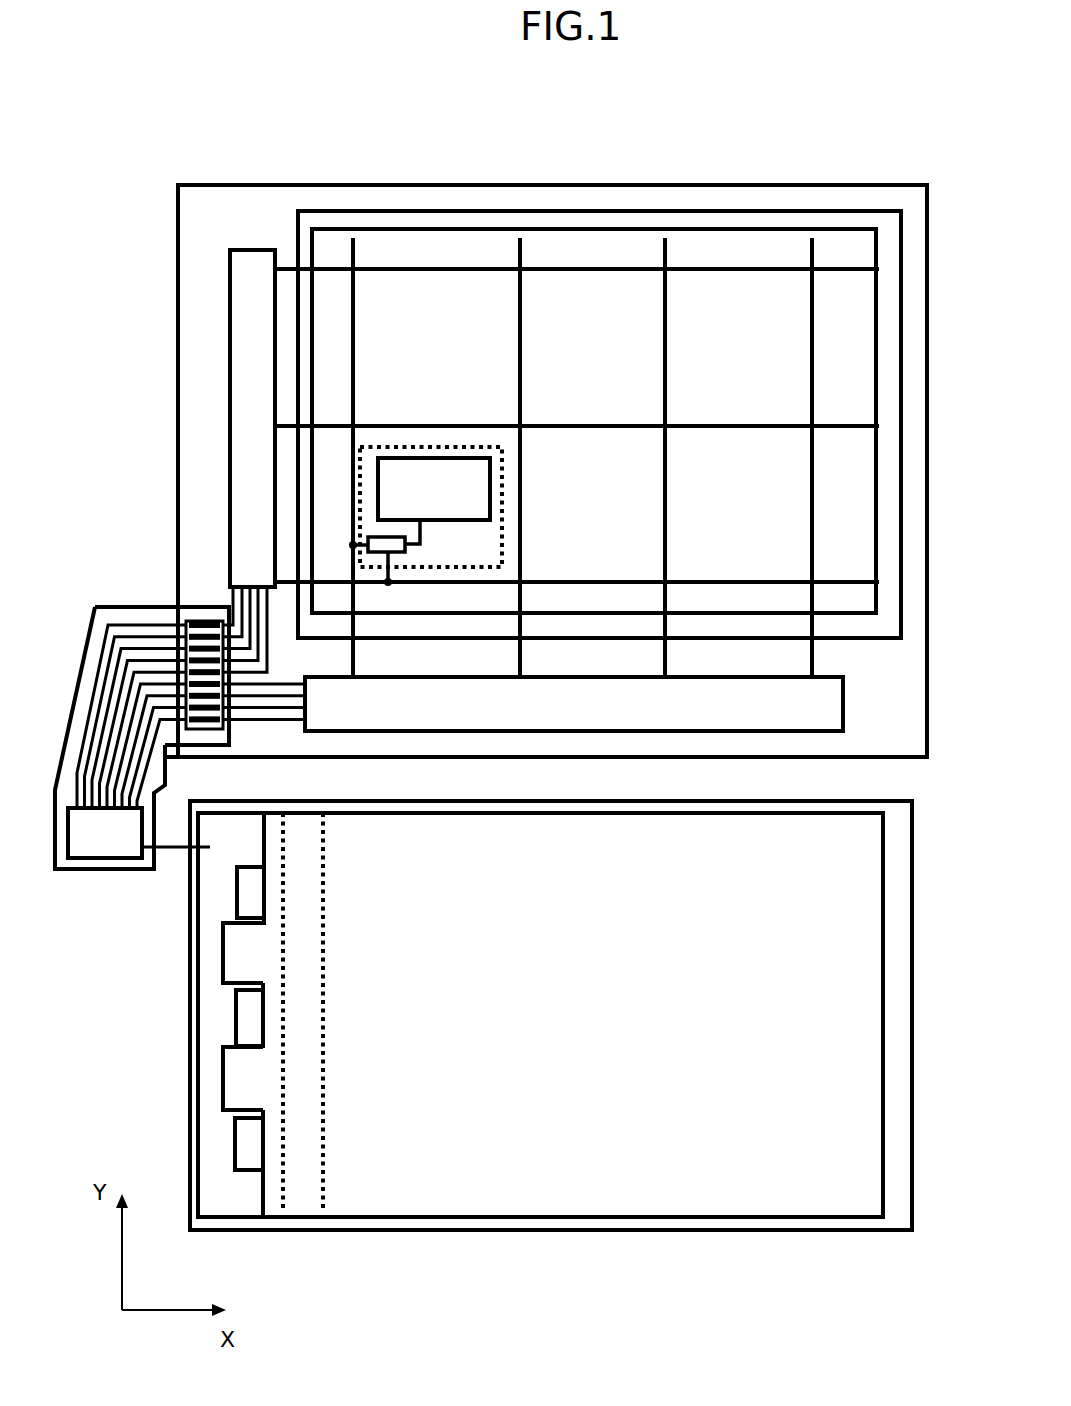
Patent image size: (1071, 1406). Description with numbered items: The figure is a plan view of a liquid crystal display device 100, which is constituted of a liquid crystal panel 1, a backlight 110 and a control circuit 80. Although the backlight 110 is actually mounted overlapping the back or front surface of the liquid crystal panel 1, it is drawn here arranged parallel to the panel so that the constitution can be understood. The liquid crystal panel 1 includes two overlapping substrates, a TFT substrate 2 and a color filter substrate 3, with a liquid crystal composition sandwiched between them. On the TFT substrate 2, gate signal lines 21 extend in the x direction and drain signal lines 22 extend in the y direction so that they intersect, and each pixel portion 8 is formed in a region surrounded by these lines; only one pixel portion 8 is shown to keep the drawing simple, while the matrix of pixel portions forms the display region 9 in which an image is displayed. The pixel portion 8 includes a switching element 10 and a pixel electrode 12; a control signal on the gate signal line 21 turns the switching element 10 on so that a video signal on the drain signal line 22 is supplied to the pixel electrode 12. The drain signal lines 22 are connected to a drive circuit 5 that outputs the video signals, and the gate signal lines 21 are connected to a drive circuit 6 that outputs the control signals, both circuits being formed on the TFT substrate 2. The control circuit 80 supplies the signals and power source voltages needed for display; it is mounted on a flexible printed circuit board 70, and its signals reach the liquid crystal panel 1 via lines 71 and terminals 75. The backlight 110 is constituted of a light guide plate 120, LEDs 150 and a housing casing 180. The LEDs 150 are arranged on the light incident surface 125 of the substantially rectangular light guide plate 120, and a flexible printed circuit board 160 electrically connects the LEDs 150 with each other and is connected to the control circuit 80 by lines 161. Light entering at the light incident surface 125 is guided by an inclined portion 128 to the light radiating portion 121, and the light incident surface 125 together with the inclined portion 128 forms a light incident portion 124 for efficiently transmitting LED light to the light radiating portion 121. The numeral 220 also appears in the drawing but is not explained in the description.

The liquid crystal panel 1 is at (576, 186).
The TFT substrate 2 is at (312, 197).
The color filter substrate 3 is at (400, 210).
The drive circuit 5 is at (845, 705).
The drive circuit 6 is at (245, 258).
The pixel portion 8 is at (503, 473).
The display region 9 is at (717, 244).
The switching element 10 is at (407, 548).
The pixel electrode 12 is at (447, 495).
The gate signal line 21 is at (578, 425).
The drain signal line 22 is at (353, 365).
The flexible printed circuit board 70 is at (130, 615).
The lines 71 is at (107, 612).
The terminals 75 is at (203, 622).
The control circuit 80 is at (93, 845).
The liquid crystal display device 100 is at (587, 1267).
The backlight 110 is at (658, 1233).
The light guide plate 120 is at (815, 1218).
The light radiating portion 121 is at (717, 1122).
The light incident portion 124 is at (273, 1192).
The light incident surface 125 is at (262, 1012).
The inclined portion 128 is at (307, 1193).
The LED 150 is at (235, 1143).
The flexible printed circuit board 160 is at (210, 1080).
The lines 161 is at (175, 849).
The housing casing 180 is at (437, 1222).
The wiring region 220 is at (247, 958).